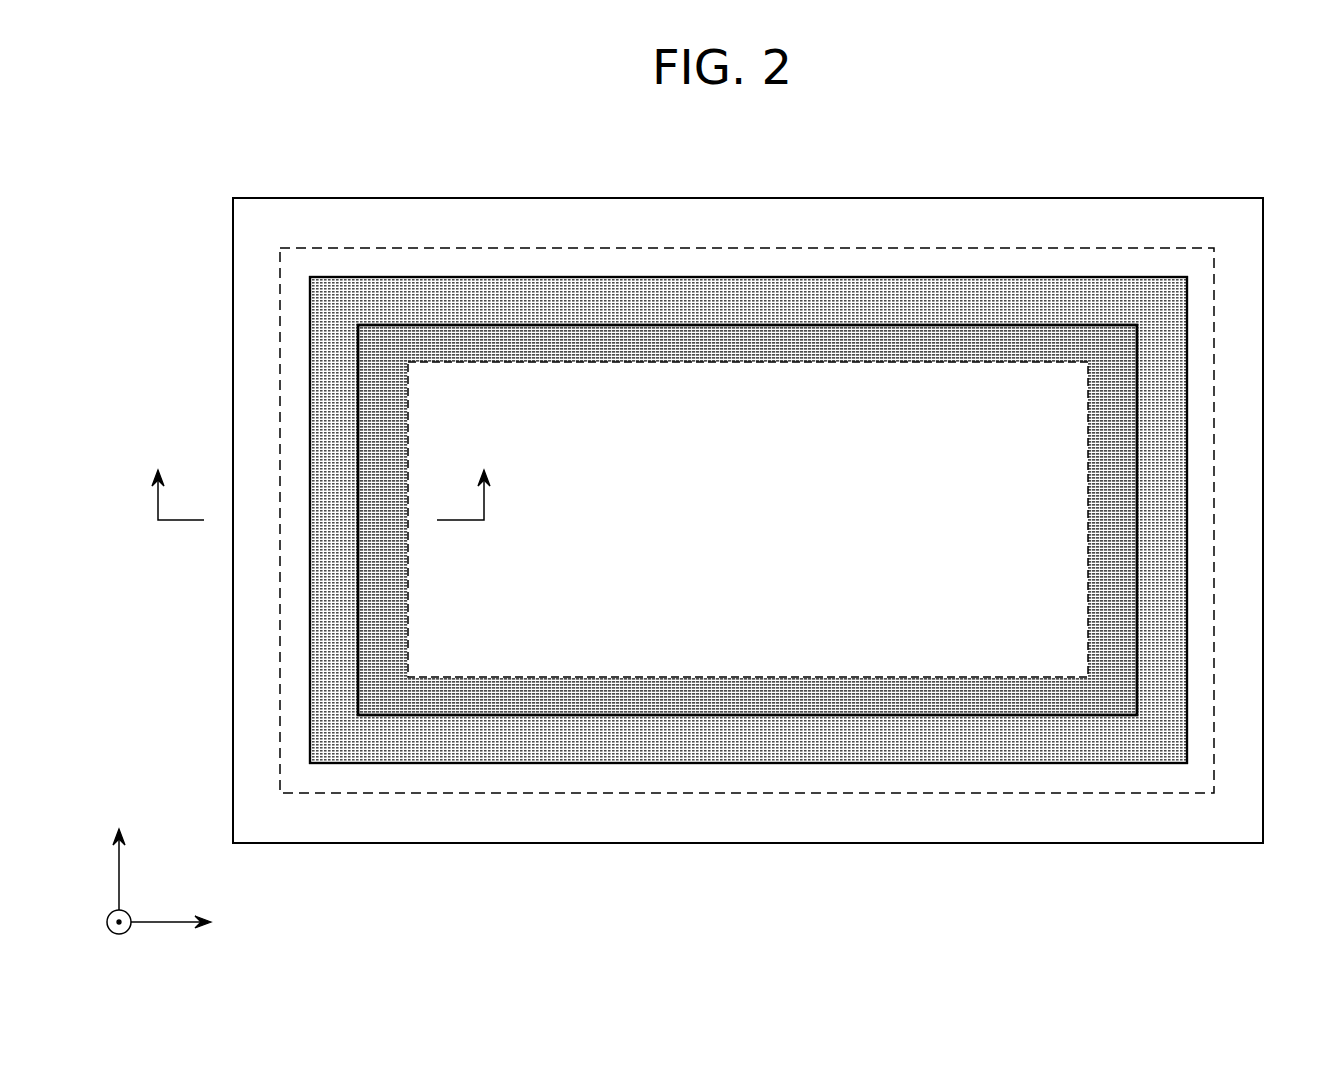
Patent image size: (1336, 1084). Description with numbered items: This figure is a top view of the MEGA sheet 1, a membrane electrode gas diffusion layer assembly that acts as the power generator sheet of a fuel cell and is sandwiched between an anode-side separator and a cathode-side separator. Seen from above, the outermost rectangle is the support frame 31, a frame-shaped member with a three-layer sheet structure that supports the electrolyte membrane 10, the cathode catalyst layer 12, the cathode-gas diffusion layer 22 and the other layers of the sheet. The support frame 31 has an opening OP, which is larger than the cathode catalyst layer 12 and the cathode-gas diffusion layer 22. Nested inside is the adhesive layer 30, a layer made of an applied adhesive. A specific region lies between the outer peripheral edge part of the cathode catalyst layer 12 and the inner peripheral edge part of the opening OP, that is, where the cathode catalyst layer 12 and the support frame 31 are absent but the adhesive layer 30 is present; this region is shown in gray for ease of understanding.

The MEGA sheet 1 is at (1311, 108).
The electrolyte membrane 10 is at (495, 247).
The cathode catalyst layer 12 is at (1002, 362).
The cathode-gas diffusion layer 22 is at (807, 345).
The adhesive layer 30 is at (608, 298).
The support frame 31 is at (942, 228).
The opening OP is at (313, 435).